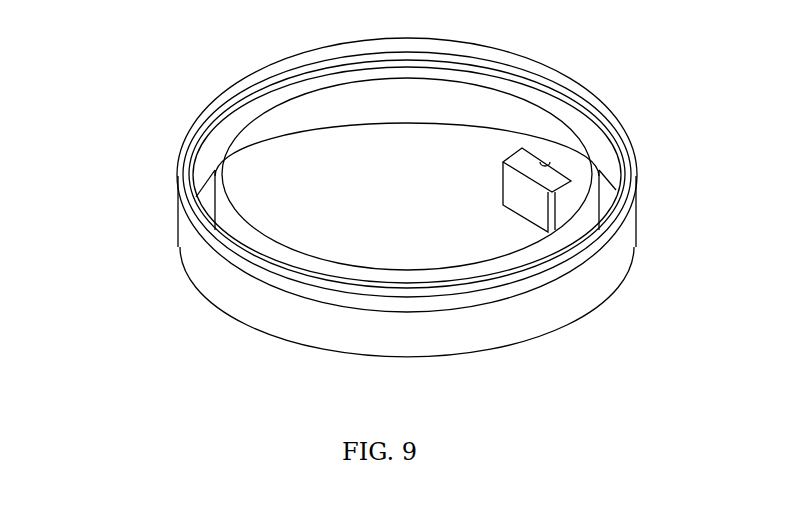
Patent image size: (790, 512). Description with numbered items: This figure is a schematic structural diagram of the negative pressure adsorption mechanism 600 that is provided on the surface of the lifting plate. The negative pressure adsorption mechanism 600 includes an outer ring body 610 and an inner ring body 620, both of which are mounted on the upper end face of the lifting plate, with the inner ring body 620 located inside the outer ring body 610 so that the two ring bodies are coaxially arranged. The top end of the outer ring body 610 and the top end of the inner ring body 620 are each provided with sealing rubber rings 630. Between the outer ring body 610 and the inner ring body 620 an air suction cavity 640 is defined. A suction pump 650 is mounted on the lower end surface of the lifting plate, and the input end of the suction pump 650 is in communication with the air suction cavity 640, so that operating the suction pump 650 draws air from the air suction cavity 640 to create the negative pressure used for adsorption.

The negative pressure adsorption mechanism 600 is at (103, 88).
The outer ring body 610 is at (193, 247).
The inner ring body 620 is at (327, 112).
The sealing rubber rings 630 is at (186, 165).
The air suction cavity 640 is at (205, 200).
The suction pump 650 is at (530, 188).